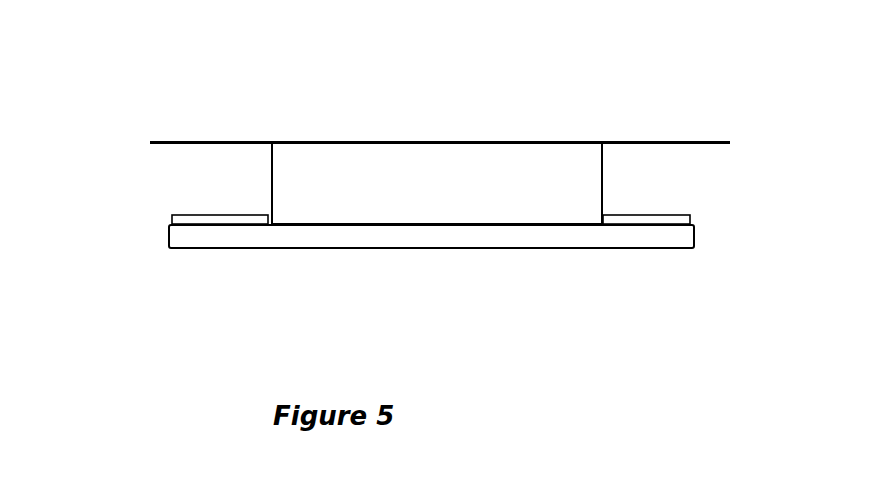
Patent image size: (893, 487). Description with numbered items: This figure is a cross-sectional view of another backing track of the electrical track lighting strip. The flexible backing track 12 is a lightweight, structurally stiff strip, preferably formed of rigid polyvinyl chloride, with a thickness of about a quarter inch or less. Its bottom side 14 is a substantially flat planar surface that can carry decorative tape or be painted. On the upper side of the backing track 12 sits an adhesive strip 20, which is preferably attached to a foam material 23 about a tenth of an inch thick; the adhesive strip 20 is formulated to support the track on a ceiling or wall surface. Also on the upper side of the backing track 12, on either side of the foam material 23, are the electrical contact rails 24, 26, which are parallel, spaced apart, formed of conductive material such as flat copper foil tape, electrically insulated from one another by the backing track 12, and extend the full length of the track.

The flexible backing track 12 is at (170, 245).
The bottom side 14 is at (448, 248).
The adhesive strip 20 is at (612, 182).
The foam material 23 is at (524, 166).
The electrical contact rail 24 is at (177, 215).
The electrical contact rail 26 is at (697, 219).